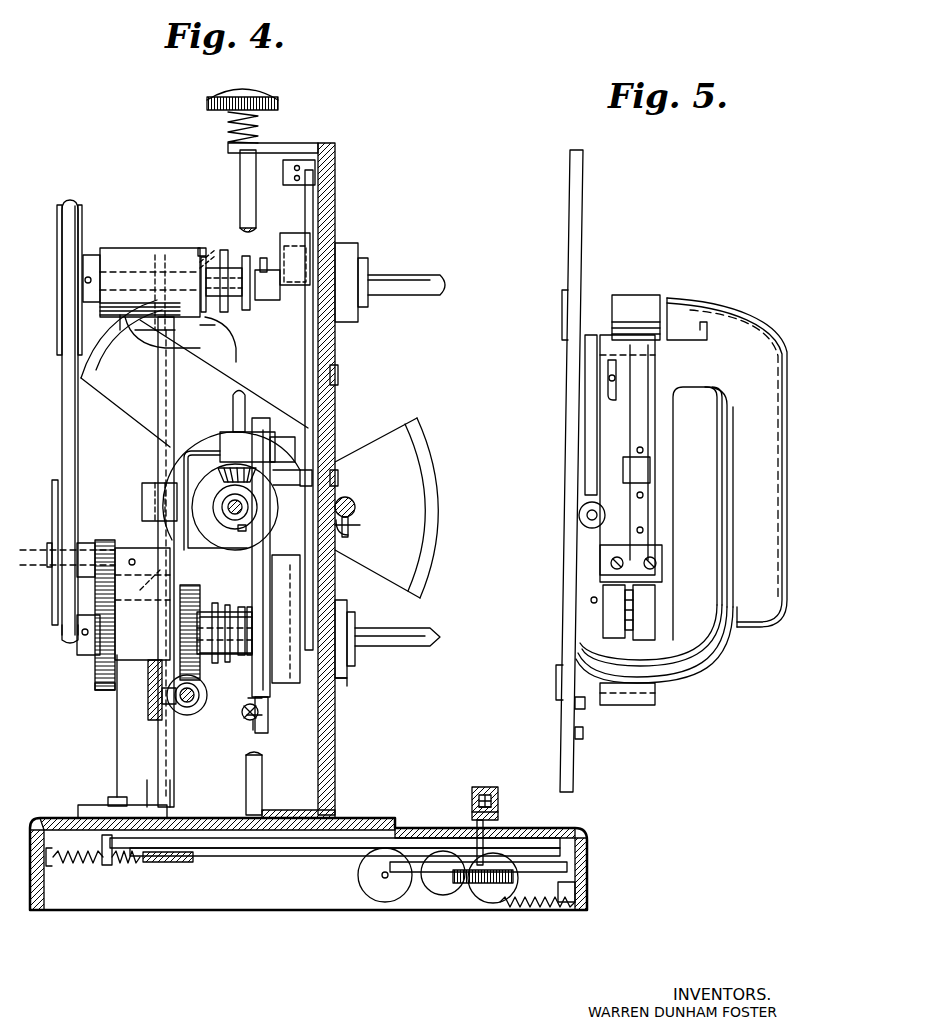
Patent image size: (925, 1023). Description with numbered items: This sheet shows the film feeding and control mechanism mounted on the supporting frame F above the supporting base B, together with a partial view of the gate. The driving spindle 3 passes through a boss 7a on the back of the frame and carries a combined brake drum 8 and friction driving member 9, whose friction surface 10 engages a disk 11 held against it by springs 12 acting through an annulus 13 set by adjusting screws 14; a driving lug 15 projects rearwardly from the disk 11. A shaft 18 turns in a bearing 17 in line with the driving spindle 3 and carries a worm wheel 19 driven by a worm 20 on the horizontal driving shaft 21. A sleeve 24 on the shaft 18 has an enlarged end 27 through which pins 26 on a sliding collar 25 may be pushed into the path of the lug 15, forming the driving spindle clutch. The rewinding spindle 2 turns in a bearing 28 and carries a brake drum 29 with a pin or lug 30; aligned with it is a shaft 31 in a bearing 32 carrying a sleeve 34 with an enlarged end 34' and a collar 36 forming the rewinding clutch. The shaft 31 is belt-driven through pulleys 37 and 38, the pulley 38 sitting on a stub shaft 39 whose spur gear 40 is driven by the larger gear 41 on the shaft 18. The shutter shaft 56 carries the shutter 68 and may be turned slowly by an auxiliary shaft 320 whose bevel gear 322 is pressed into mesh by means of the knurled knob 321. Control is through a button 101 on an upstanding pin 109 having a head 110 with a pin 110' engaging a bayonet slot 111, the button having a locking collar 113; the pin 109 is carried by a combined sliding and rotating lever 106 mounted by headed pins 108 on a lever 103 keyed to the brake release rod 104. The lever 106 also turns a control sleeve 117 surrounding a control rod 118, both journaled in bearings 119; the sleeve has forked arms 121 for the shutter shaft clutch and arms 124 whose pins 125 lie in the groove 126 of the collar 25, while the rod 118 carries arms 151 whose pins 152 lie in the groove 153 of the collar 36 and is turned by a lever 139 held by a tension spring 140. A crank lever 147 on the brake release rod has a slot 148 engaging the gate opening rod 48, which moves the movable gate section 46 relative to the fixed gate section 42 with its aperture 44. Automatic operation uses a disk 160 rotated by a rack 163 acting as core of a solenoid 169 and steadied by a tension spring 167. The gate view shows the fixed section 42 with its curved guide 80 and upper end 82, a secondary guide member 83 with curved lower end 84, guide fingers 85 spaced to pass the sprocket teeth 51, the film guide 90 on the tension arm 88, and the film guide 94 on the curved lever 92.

In FIG. 4, the rewinding spindle 2 is at (440, 293).
In FIG. 4, the driving spindle 3 is at (436, 636).
In FIG. 4, the enlarged base 7a is at (345, 680).
In FIG. 4, the brake drum 8 is at (288, 684).
In FIG. 4, the friction driving member 9 is at (270, 728).
In FIG. 4, the friction surface 10 is at (270, 585).
In FIG. 4, the disk 11 is at (254, 722).
In FIG. 4, the springs 12 is at (262, 722).
In FIG. 4, the annulus 13 is at (245, 690).
In FIG. 4, the adjusting screws 14 is at (250, 716).
In FIG. 4, the driving lug 15 is at (248, 612).
In FIG. 4, the bearing 17 is at (163, 650).
In FIG. 4, the shaft 18 is at (80, 645).
In FIG. 4, the worm wheel 19 is at (172, 696).
In FIG. 4, the worm 20 is at (182, 692).
In FIG. 4, the driving shaft 21 is at (189, 703).
In FIG. 4, the sleeve 24 is at (243, 650).
In FIG. 4, the collar 25 is at (228, 605).
In FIG. 4, the pins 26 is at (253, 665).
In FIG. 4, the enlarged end 27 is at (248, 633).
In FIG. 4, the bearing 28 is at (343, 254).
In FIG. 4, the brake drum 29 is at (297, 232).
In FIG. 4, the pin or lug 30 is at (263, 258).
In FIG. 4, the shaft 31 is at (99, 258).
In FIG. 4, the bearing 32 is at (133, 258).
In FIG. 4, the sleeve 34 is at (224, 259).
In FIG. 4, the enlarged end 34' is at (245, 269).
In FIG. 4, the collar 36 is at (204, 256).
In FIG. 4, the pulley 37 is at (58, 215).
In FIG. 4, the pulley 38 is at (55, 480).
In FIG. 4, the stub shaft 39 is at (62, 598).
In FIG. 4, the spur gear 40 is at (105, 540).
In FIG. 4, the gear 41 is at (95, 686).
In FIG. 5, the gate section 42 is at (585, 445).
In FIG. 5, the aperture 44 is at (628, 470).
In FIG. 5, the movable section 46 is at (615, 402).
In FIG. 5, the gate opening rod 48 is at (590, 516).
In FIG. 5, the film engaging teeth 51 is at (633, 594).
In FIG. 4, the shutter shaft 56 is at (325, 486).
In FIG. 4, the shutter 68 is at (430, 453).
In FIG. 5, the projecting guide 80 is at (666, 519).
In FIG. 5, the upper end 82 is at (690, 306).
In FIG. 5, the secondary guide member 83 is at (703, 513).
In FIG. 5, the curved lower end 84 is at (660, 675).
In FIG. 5, the guide fingers 85 is at (606, 611).
In FIG. 5, the tension arm 88 is at (561, 311).
In FIG. 5, the film guide 90 is at (636, 302).
In FIG. 5, the curved lever 92 is at (556, 681).
In FIG. 5, the film guide 94 is at (625, 695).
In FIG. 4, the control button 101 is at (480, 787).
In FIG. 4, the lever 103 is at (318, 848).
In FIG. 4, the brake release rod 104 is at (262, 780).
In FIG. 4, the combined sliding and rotating lever 106 is at (352, 858).
In FIG. 4, the headed pin 108 is at (498, 842).
In FIG. 4, the upstanding pin 109 is at (489, 805).
In FIG. 4, the head 110 is at (506, 783).
In FIG. 4, the inwardly projecting pin 110' is at (510, 814).
In FIG. 4, the bayonet shaped slot 111 is at (478, 798).
In FIG. 4, the collar 113 is at (472, 813).
In FIG. 4, the control sleeve 117 is at (152, 585).
In FIG. 4, the control rod 118 is at (165, 386).
In FIG. 4, the bearings 119 is at (160, 505).
In FIG. 4, the forked operating arms 121 is at (200, 455).
In FIG. 4, the arms 124 is at (200, 586).
In FIG. 4, the pins 125 is at (216, 603).
In FIG. 4, the groove 126 is at (198, 622).
In FIG. 4, the lever 139 is at (200, 862).
In FIG. 4, the tension spring 140 is at (90, 862).
In FIG. 4, the crank lever 147 is at (351, 521).
In FIG. 4, the slot 148 is at (348, 535).
In FIG. 4, the spaced arms 151 is at (200, 254).
In FIG. 4, the pins 152 is at (205, 338).
In FIG. 4, the groove 153 is at (226, 330).
In FIG. 4, the disk 160 is at (568, 870).
In FIG. 4, the rack 163 is at (590, 895).
In FIG. 4, the tension spring 167 is at (555, 908).
In FIG. 4, the solenoid 169 is at (545, 882).
In FIG. 4, the shaft 320 is at (240, 180).
In FIG. 4, the knurled actuating knob 321 is at (278, 103).
In FIG. 4, the bevel gear 322 is at (245, 505).
In FIG. 4, the supporting base B is at (590, 848).
In FIG. 4, the supporting frame F is at (334, 396).
In FIG. 5, the supporting frame F is at (578, 778).